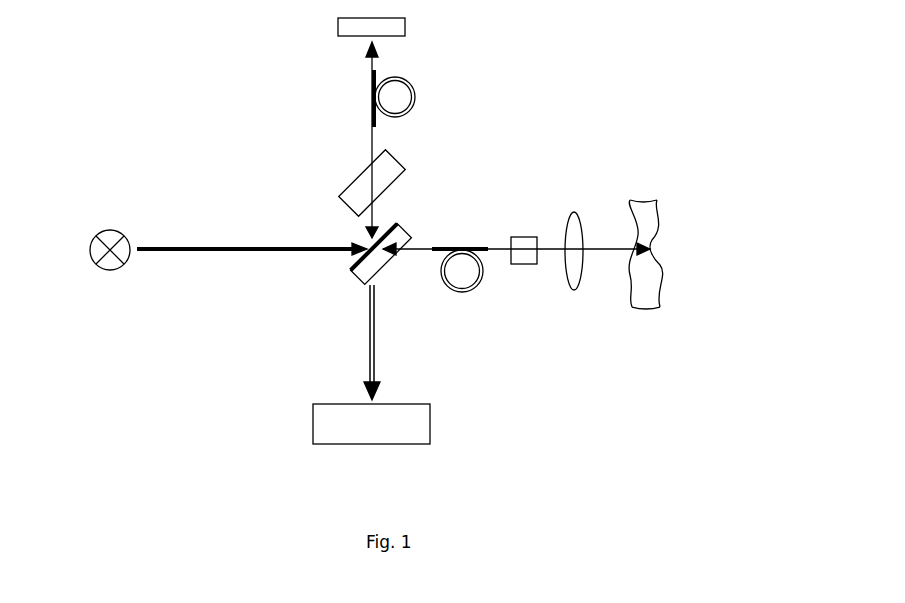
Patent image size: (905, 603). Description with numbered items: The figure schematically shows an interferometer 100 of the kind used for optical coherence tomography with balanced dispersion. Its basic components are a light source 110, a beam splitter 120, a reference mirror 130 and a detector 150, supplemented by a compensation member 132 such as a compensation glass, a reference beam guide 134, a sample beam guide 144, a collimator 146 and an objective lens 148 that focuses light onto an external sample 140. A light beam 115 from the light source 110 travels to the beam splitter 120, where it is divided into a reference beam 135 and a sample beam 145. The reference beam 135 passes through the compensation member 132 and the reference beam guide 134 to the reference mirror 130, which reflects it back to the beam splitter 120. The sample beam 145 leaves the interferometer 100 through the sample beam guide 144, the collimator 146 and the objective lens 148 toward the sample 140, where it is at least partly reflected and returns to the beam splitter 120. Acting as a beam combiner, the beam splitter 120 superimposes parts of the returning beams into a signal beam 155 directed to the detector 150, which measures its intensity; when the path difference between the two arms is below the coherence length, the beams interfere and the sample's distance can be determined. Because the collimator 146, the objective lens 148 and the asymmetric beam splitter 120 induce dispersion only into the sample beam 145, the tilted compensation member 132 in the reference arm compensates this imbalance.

The interferometer 100 is at (116, 61).
The light source 110 is at (108, 270).
The light beam 115 is at (222, 244).
The beam splitter 120 is at (352, 280).
The reference mirror 130 is at (337, 37).
The compensation member 132 is at (405, 168).
The reference beam guide 134 is at (415, 98).
The reference beam 135 is at (372, 140).
The sample 140 is at (653, 292).
The sample beam guide 144 is at (452, 288).
The sample beam 145 is at (554, 248).
The collimator 146 is at (523, 265).
The objective lens 148 is at (573, 288).
The detector 150 is at (371, 424).
The signal beam 155 is at (368, 363).